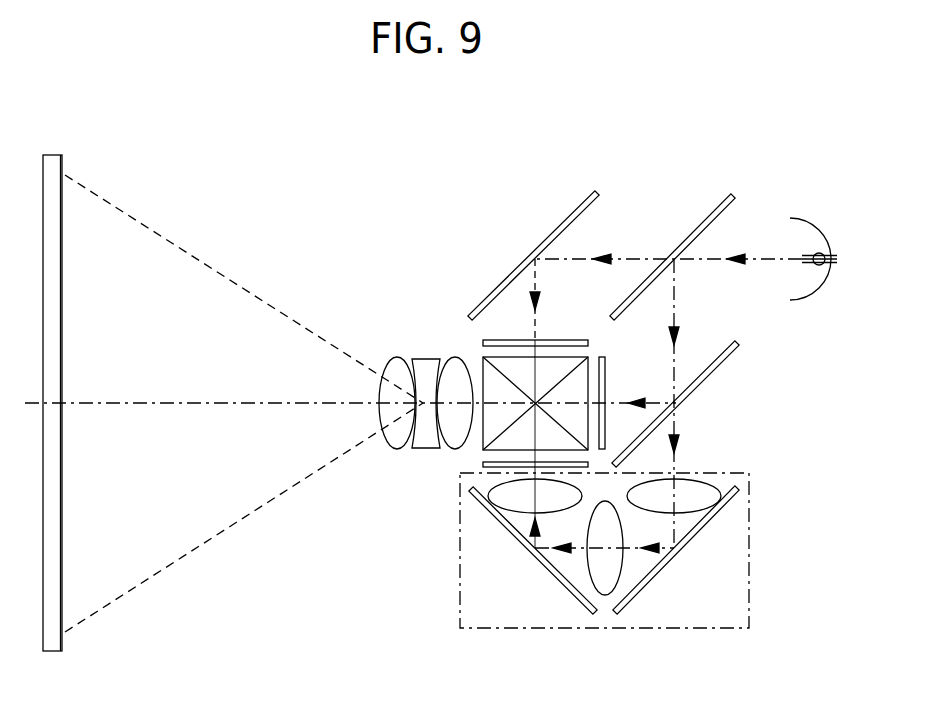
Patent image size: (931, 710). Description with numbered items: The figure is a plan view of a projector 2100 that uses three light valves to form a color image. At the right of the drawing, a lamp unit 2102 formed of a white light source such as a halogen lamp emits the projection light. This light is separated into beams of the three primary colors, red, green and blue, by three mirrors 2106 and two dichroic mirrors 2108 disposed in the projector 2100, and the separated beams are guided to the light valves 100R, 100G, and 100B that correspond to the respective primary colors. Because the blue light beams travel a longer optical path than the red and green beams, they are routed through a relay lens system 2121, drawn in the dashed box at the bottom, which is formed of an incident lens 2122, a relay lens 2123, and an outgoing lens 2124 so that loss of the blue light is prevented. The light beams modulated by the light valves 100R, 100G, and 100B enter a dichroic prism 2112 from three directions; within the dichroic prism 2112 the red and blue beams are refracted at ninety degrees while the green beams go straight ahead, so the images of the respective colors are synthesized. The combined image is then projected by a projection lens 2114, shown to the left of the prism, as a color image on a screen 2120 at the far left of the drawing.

The projector 2100 is at (702, 132).
The lamp unit 2102 is at (817, 253).
The mirrors 2106 is at (565, 222).
The dichroic mirrors 2108 is at (700, 222).
The dichroic prism 2112 is at (486, 338).
The projection lens 2114 is at (472, 351).
The screen 2120 is at (62, 645).
The relay lens system 2121 is at (750, 527).
The incident lens 2122 is at (695, 505).
The relay lens 2123 is at (613, 578).
The outgoing lens 2124 is at (512, 502).
The light valve 100R is at (517, 338).
The light valve 100G is at (606, 380).
The light valve 100B is at (483, 465).